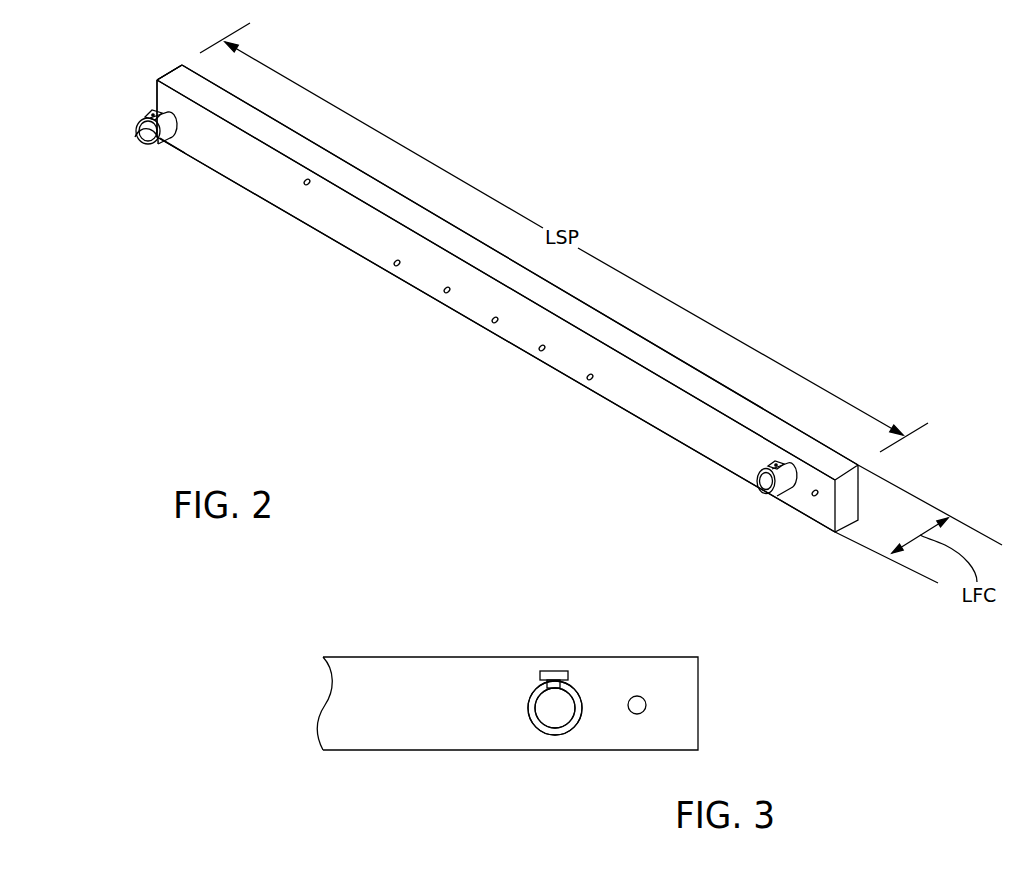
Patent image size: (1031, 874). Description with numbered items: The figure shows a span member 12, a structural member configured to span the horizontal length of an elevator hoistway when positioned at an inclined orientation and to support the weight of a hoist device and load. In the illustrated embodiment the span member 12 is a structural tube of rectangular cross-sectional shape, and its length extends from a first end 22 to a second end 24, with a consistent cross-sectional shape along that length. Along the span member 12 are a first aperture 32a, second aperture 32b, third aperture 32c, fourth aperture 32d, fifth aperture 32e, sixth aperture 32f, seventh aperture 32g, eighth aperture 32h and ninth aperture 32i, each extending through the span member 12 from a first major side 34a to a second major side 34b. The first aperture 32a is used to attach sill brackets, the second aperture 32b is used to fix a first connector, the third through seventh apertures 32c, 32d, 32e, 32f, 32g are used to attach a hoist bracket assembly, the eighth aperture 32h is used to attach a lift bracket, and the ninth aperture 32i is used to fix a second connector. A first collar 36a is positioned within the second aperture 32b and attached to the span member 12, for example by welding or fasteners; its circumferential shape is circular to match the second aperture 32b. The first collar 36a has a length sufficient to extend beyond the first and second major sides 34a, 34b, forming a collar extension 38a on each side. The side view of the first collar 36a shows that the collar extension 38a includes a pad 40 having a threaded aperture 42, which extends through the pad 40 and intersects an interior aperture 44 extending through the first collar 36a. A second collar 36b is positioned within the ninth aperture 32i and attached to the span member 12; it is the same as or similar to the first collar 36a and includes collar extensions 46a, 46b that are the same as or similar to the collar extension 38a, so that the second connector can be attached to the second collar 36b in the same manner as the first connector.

In FIG. 2, the span member 12 is at (703, 157).
In FIG. 3, the span member 12 is at (330, 582).
In FIG. 2, the first end 22 is at (827, 526).
In FIG. 3, the first end 22 is at (667, 657).
In FIG. 2, the second end 24 is at (155, 95).
In FIG. 2, the first aperture 32a is at (815, 496).
In FIG. 3, the first aperture 32a is at (638, 713).
In FIG. 2, the second aperture 32b is at (787, 492).
In FIG. 3, the second aperture 32b is at (540, 727).
In FIG. 2, the third aperture 32c is at (590, 377).
In FIG. 2, the fourth aperture 32d is at (542, 348).
In FIG. 2, the fifth aperture 32e is at (495, 320).
In FIG. 2, the sixth aperture 32f is at (447, 290).
In FIG. 2, the seventh aperture 32g is at (397, 263).
In FIG. 2, the eighth aperture 32h is at (307, 183).
In FIG. 2, the ninth aperture 32i is at (173, 138).
In FIG. 2, the first major side 34a is at (650, 397).
In FIG. 2, the second major side 34b is at (208, 78).
In FIG. 2, the first collar 36a is at (762, 493).
In FIG. 3, the first collar 36a is at (577, 723).
In FIG. 2, the second collar 36b is at (138, 131).
In FIG. 2, the collar extension 38a is at (762, 472).
In FIG. 3, the collar extension 38a is at (582, 697).
In FIG. 2, the pad 40 is at (148, 116).
In FIG. 3, the pad 40 is at (542, 678).
In FIG. 3, the threaded aperture 42 is at (563, 672).
In FIG. 3, the interior aperture 44 is at (557, 712).
In FIG. 2, the collar extension 46a is at (155, 148).
In FIG. 2, the collar extension 46b is at (210, 80).